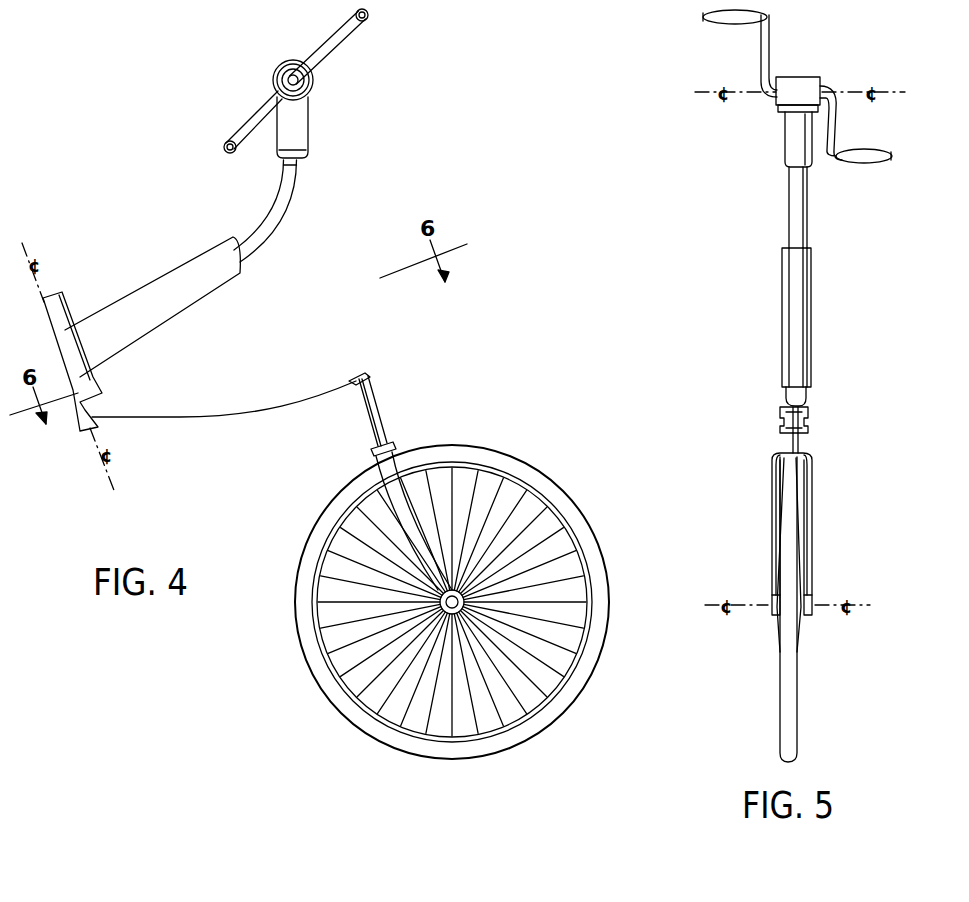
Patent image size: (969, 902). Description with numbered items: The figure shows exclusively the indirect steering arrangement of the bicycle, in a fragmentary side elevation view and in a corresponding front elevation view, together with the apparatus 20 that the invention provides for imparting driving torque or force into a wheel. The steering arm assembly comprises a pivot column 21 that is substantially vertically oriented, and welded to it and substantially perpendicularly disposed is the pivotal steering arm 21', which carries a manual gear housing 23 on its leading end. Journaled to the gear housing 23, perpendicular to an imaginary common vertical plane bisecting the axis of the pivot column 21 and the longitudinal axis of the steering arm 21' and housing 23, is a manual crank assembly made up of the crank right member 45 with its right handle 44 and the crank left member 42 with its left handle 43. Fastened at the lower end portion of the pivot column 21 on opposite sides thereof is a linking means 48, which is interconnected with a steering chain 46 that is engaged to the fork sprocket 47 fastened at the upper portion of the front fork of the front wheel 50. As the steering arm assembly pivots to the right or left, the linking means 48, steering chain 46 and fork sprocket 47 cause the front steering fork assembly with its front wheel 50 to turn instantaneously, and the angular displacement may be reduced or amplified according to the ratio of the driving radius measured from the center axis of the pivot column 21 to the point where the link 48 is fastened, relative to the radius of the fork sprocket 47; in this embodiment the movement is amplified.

In FIG. 4, the apparatus 20 is at (185, 128).
In FIG. 5, the apparatus 20 is at (825, 57).
In FIG. 4, the pivot column 21 is at (72, 395).
In FIG. 4, the pivotal steering arm 21' is at (291, 211).
In FIG. 5, the pivotal steering arm 21' is at (773, 277).
In FIG. 4, the manual gear housing 23 is at (312, 86).
In FIG. 5, the manual gear housing 23 is at (784, 140).
In FIG. 4, the crank left member 42 is at (252, 118).
In FIG. 5, the crank left member 42 is at (838, 118).
In FIG. 4, the left handle 43 is at (222, 148).
In FIG. 5, the left handle 43 is at (868, 164).
In FIG. 4, the right handle 44 is at (368, 14).
In FIG. 5, the right handle 44 is at (700, 8).
In FIG. 4, the crank right member 45 is at (346, 48).
In FIG. 5, the crank right member 45 is at (760, 58).
In FIG. 4, the steering chain 46 is at (350, 390).
In FIG. 5, the steering chain 46 is at (809, 412).
In FIG. 4, the fork sprocket 47 is at (365, 372).
In FIG. 5, the fork sprocket 47 is at (807, 396).
In FIG. 4, the linking means 48 is at (185, 413).
In FIG. 5, the linking means 48 is at (780, 412).
In FIG. 4, the front wheel 50 is at (502, 455).
In FIG. 5, the front wheel 50 is at (798, 716).